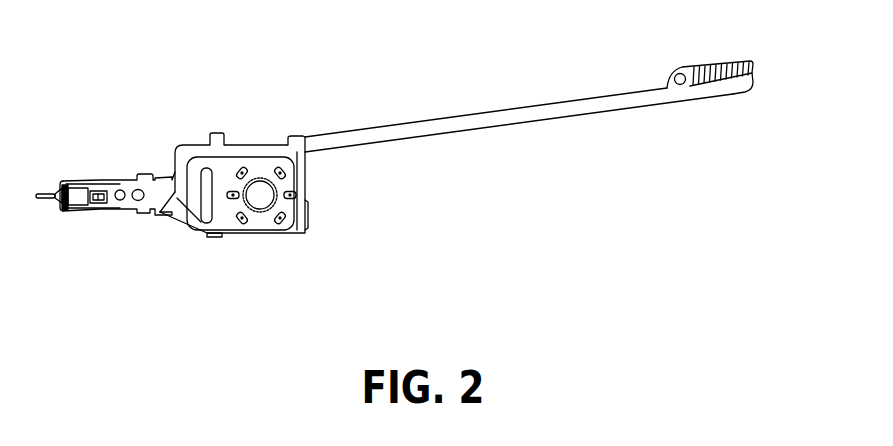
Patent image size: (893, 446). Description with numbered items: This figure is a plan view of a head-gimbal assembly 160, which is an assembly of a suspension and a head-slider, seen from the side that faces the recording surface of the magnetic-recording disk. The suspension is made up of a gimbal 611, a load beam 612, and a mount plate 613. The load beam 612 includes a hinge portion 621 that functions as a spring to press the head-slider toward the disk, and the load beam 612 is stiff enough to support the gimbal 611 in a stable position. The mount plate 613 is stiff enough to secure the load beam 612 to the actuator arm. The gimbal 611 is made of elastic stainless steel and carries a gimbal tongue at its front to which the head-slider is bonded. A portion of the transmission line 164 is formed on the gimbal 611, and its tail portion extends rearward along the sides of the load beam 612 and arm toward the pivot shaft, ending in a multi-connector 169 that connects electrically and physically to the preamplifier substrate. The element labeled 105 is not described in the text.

The head-gimbal assembly 160 is at (172, 33).
The transmission line 164 is at (259, 143).
The multi-connector 169 is at (733, 58).
The mount plate 613 is at (307, 194).
The load beam 612 is at (178, 228).
The hinge portion 621 is at (207, 236).
The gimbal 611 is at (120, 216).
The plug 105 is at (68, 218).